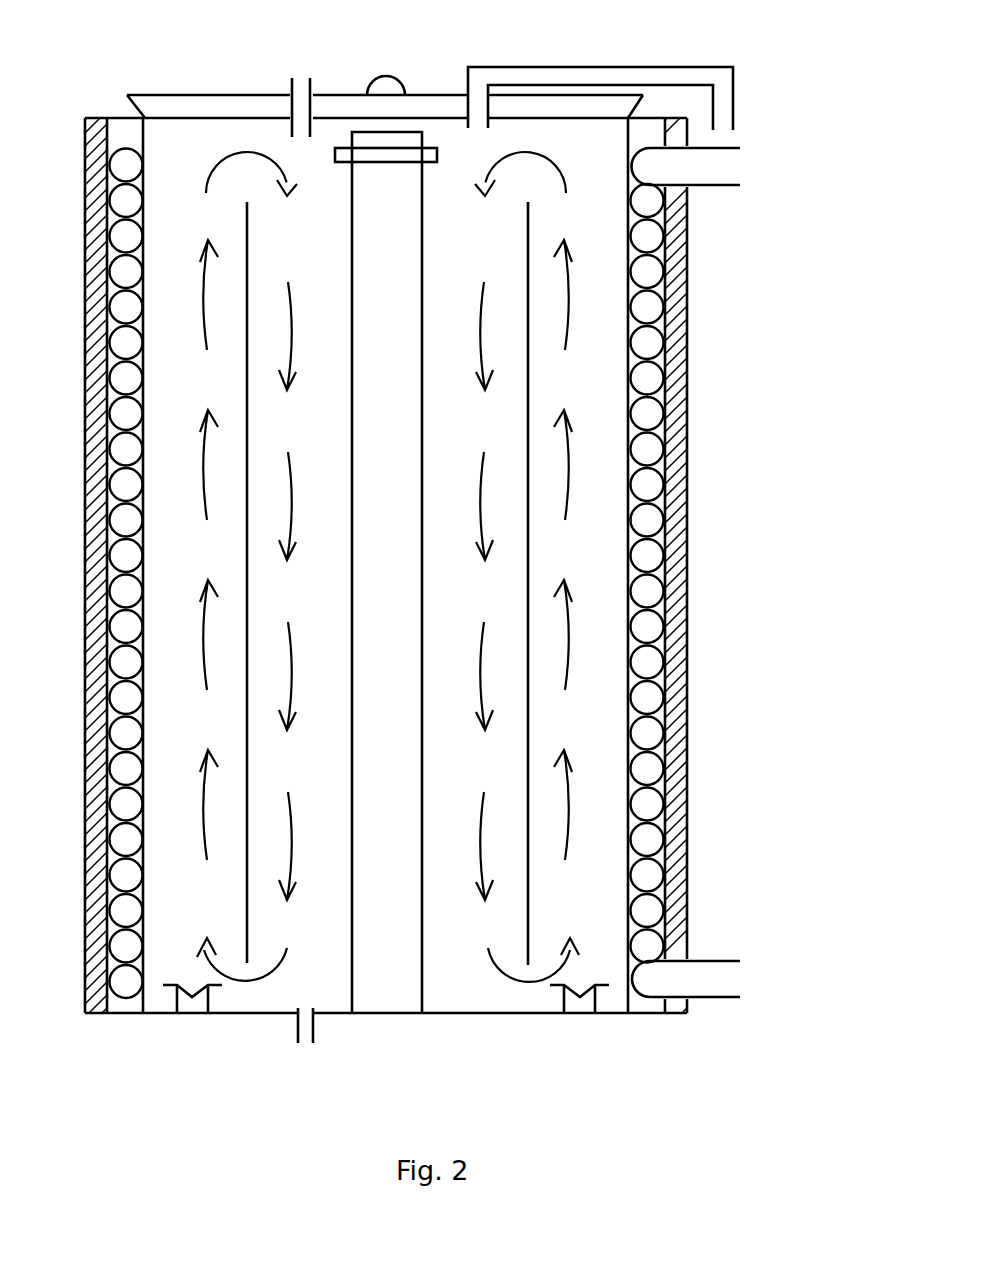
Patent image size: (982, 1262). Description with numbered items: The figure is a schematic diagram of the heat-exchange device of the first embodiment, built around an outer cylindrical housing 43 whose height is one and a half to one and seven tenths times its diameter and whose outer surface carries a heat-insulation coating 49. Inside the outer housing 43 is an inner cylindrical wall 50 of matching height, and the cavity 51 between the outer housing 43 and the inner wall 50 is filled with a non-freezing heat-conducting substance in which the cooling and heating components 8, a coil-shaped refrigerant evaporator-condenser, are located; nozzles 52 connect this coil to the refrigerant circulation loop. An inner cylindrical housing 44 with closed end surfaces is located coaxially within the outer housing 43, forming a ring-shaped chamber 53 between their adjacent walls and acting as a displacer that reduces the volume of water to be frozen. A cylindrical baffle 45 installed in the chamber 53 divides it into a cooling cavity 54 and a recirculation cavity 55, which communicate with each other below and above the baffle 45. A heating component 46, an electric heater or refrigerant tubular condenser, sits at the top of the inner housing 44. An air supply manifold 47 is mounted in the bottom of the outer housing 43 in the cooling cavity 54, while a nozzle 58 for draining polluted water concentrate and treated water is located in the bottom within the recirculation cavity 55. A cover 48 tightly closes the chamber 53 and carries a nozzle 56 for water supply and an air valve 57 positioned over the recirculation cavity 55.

The cooling and heating components 8 is at (647, 557).
The outer cylindrical housing 43 is at (663, 822).
The inner cylindrical housing 44 is at (373, 315).
The cylindrical baffle 45 is at (528, 763).
The heating component 46 is at (410, 155).
The air supply manifold 47 is at (193, 1007).
The cover 48 is at (523, 108).
The heat-insulation coating 49 is at (677, 665).
The inner cylindrical wall 50 is at (627, 767).
The cavity 51 is at (647, 135).
The nozzles 52 is at (727, 167).
The ring-shaped chamber 53 is at (240, 138).
The cooling cavity 54 is at (172, 275).
The recirculation cavity 55 is at (304, 277).
The nozzle for water supply 56 is at (302, 107).
The air valve 57 is at (597, 77).
The nozzle for draining 58 is at (305, 1028).